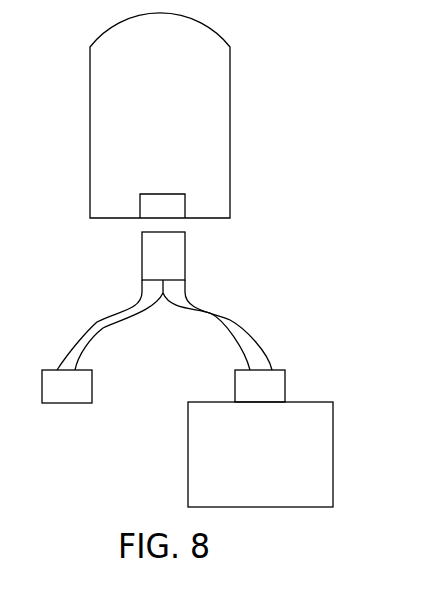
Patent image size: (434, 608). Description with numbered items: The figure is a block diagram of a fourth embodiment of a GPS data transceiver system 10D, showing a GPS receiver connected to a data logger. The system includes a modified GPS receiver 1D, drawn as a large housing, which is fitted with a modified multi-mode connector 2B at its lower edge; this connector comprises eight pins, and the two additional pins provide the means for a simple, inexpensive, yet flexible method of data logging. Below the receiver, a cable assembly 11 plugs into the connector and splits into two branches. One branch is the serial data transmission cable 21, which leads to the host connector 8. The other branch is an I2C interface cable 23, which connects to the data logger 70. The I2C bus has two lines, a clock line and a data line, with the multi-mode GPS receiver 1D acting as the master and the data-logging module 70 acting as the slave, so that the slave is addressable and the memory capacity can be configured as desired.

The GPS data transceiver system 10D is at (170, 134).
The modified GPS receiver 1D is at (109, 113).
The modified multi-mode connector 2B is at (147, 210).
The cable assembly 11 is at (161, 301).
The RS-232 data transmission cable 21 is at (102, 323).
The I2C interface cable 23 is at (223, 320).
The host connector 8 is at (83, 387).
The data logger 70 is at (313, 415).